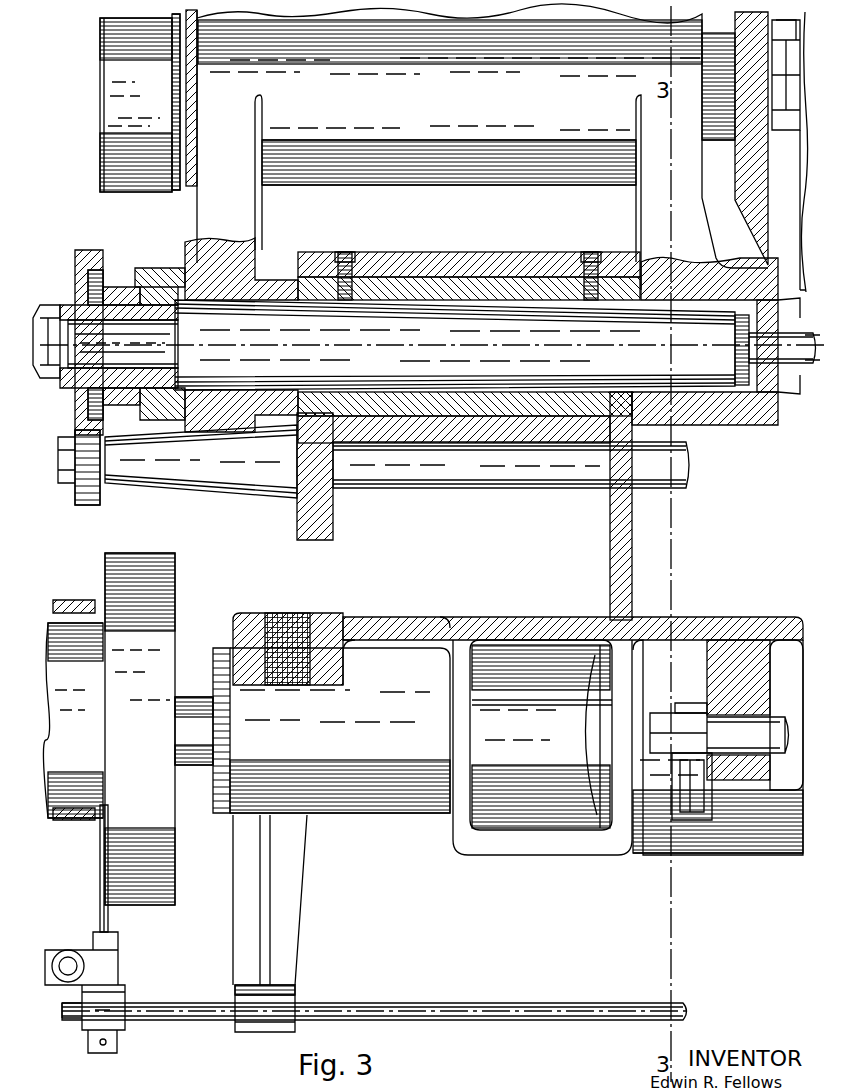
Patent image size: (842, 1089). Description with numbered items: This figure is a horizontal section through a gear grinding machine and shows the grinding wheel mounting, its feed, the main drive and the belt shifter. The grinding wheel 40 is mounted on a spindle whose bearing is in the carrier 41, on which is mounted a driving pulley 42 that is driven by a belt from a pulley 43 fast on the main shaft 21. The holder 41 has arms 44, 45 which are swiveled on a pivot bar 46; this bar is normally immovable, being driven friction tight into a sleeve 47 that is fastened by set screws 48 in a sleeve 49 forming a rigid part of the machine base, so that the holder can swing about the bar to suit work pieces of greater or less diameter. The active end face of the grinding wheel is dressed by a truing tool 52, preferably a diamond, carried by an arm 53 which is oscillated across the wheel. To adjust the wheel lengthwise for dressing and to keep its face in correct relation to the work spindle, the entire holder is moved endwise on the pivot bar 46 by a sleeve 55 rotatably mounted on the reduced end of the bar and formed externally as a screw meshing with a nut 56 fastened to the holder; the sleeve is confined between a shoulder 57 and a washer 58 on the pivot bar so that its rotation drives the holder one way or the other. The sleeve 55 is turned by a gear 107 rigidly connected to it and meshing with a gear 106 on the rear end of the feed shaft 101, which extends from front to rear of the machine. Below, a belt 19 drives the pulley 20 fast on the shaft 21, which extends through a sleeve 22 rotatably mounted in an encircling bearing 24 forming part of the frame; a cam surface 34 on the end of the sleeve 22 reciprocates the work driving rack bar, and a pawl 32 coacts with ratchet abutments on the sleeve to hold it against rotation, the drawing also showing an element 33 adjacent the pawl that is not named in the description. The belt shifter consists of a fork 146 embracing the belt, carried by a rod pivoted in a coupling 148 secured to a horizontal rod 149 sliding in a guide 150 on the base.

The driving pulley 42 is at (108, 78).
The carrier 41 is at (474, 143).
The arm 44 is at (240, 212).
The arm 45 is at (643, 210).
The grinding wheel 40 is at (752, 180).
The truing tool 52 is at (798, 30).
The arm 53 is at (798, 168).
The sleeve 47 is at (498, 296).
The sleeve 49 is at (446, 260).
The set screws 48 is at (347, 252).
The pivot bar 46 is at (380, 338).
The shoulder 57 is at (180, 350).
The washer 58 is at (56, 305).
The gear 107 is at (83, 252).
The sleeve 55 is at (108, 290).
The nut 56 is at (140, 288).
The shaft 101 is at (420, 483).
The gear 106 is at (90, 505).
The pulley 20 is at (73, 720).
The belt 19 is at (63, 600).
The pulley 43 is at (163, 655).
The shaft 21 is at (190, 770).
The cam surface 34 is at (580, 702).
The sleeve 22 is at (705, 795).
The bolt 33 is at (770, 755).
The pawl 32 is at (686, 822).
The bearing 24 is at (642, 850).
The fork 146 is at (104, 916).
The coupling 148 is at (122, 1022).
The rod 149 is at (170, 1008).
The guide 150 is at (282, 980).